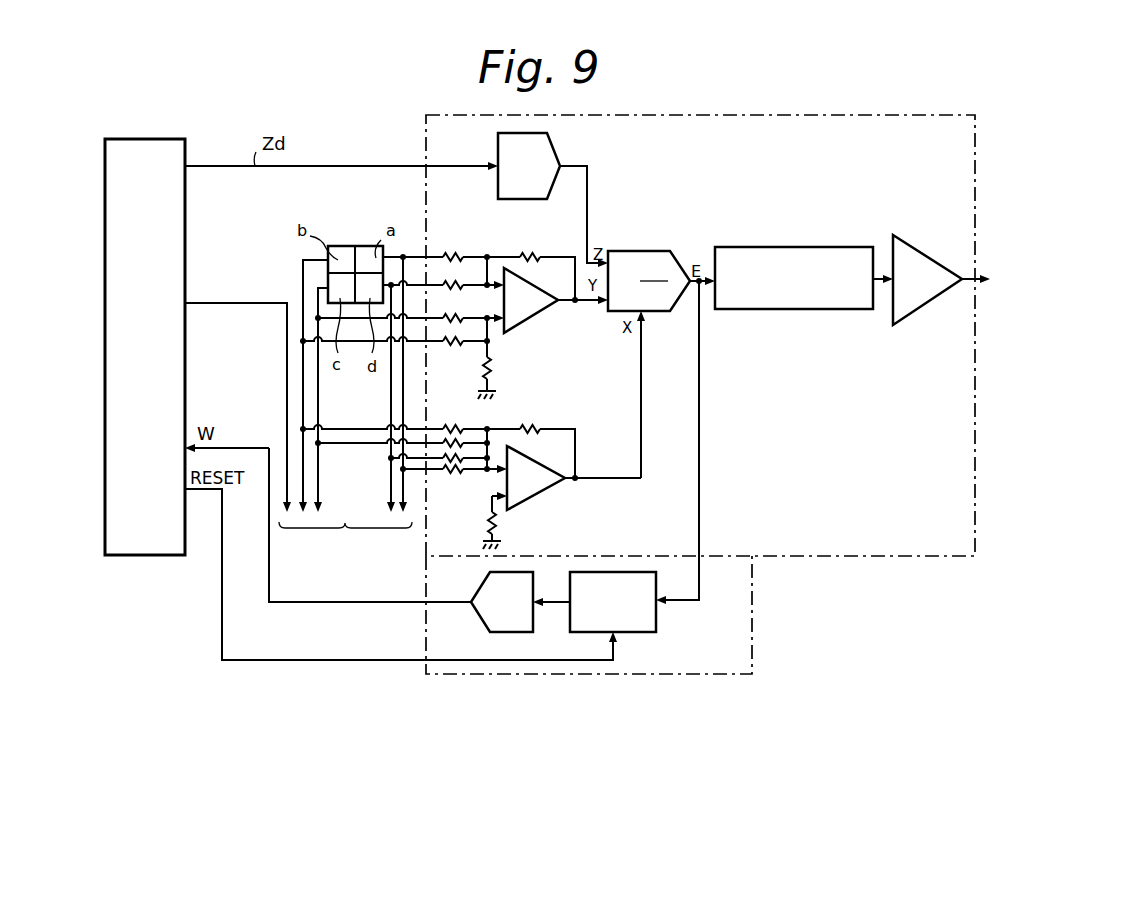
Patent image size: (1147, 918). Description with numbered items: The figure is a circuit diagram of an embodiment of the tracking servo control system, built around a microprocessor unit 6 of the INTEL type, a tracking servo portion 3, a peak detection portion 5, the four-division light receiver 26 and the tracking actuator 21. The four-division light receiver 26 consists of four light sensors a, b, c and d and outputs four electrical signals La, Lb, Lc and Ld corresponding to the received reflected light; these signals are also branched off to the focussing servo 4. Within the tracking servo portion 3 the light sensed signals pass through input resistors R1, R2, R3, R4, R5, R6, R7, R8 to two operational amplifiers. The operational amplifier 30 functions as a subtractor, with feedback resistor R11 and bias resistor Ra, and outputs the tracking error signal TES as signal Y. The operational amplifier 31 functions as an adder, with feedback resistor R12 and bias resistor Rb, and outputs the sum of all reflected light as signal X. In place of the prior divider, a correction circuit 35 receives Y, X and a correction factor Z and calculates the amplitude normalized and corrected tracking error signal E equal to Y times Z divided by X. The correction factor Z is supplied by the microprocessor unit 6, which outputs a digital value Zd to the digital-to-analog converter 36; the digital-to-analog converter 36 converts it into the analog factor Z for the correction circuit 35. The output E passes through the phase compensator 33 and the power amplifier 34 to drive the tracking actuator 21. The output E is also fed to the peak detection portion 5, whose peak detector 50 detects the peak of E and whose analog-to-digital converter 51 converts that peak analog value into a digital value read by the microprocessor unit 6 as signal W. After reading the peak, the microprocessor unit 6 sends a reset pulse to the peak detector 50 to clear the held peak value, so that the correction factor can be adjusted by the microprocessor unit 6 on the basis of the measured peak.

The four-division light receiver 26 is at (363, 246).
The digital-to-analog converter (DAC) 36 is at (554, 153).
The correction circuit 35 is at (647, 252).
The phase compensator 33 is at (787, 311).
The power amplifier 34 is at (916, 252).
The tracking servo portion 3 is at (975, 142).
The operational amplifier 30 is at (545, 318).
The operational amplifier 31 is at (548, 496).
The microprocessor unit (MPU) 6 is at (145, 555).
The peak detection portion 5 is at (752, 610).
The peak detector 50 is at (640, 632).
The analog-to-digital converter (ADC) 51 is at (481, 617).
The tracking actuator 21 is at (1036, 289).
The focussing servo 4 is at (343, 551).
The input resistor R1 is at (452, 254).
The input resistor R2 is at (452, 272).
The input resistor R3 is at (451, 304).
The input resistor R4 is at (444, 343).
The input resistor R5 is at (462, 428).
The input resistor R6 is at (440, 440).
The input resistor R7 is at (442, 461).
The input resistor R8 is at (446, 472).
The feedback resistor R11 is at (531, 257).
The feedback resistor R12 is at (544, 432).
The bias resistor Ra is at (492, 373).
The bias resistor Rb is at (497, 528).